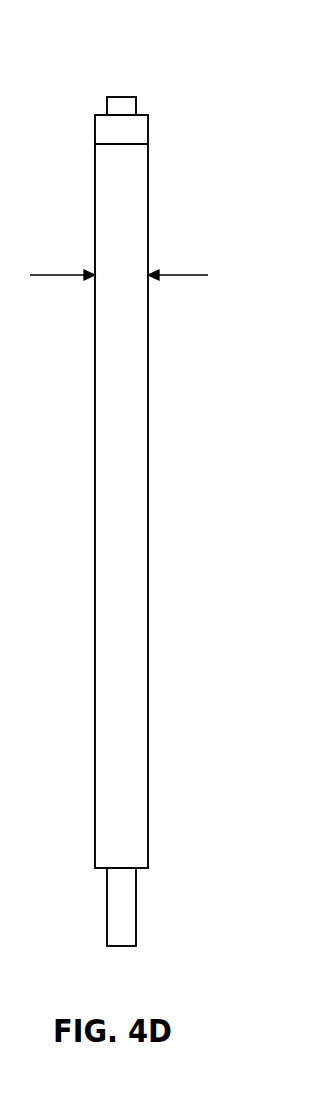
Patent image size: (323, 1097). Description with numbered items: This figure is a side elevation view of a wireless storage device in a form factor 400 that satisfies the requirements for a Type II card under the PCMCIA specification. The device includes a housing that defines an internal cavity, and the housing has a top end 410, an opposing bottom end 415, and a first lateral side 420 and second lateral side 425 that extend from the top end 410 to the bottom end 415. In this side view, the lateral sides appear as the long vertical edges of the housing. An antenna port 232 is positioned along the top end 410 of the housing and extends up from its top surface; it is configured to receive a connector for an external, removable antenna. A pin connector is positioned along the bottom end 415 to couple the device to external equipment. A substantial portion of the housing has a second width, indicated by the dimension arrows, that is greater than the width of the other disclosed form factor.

The form factor 400 is at (129, 48).
The top end 410 is at (95, 114).
The antenna port 232 is at (135, 97).
The first lateral side 420 is at (122, 505).
The second lateral side 425 is at (85, 506).
The bottom end 415 is at (122, 946).